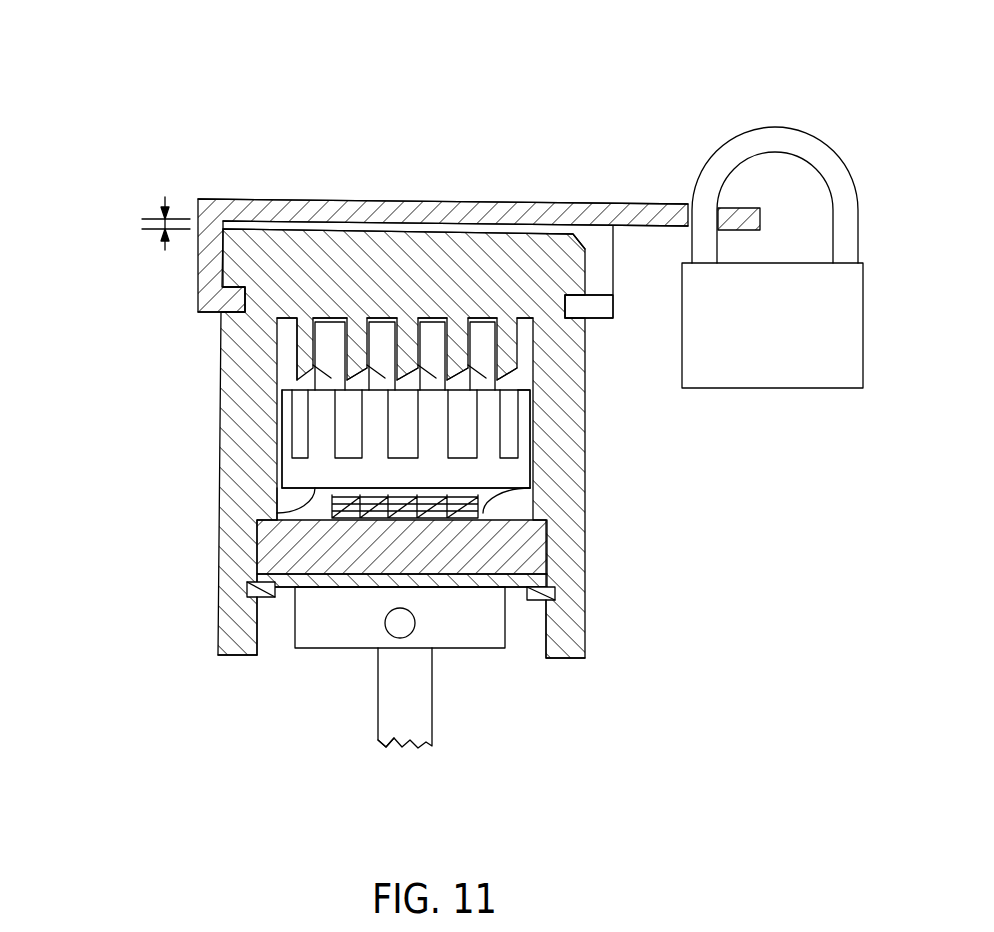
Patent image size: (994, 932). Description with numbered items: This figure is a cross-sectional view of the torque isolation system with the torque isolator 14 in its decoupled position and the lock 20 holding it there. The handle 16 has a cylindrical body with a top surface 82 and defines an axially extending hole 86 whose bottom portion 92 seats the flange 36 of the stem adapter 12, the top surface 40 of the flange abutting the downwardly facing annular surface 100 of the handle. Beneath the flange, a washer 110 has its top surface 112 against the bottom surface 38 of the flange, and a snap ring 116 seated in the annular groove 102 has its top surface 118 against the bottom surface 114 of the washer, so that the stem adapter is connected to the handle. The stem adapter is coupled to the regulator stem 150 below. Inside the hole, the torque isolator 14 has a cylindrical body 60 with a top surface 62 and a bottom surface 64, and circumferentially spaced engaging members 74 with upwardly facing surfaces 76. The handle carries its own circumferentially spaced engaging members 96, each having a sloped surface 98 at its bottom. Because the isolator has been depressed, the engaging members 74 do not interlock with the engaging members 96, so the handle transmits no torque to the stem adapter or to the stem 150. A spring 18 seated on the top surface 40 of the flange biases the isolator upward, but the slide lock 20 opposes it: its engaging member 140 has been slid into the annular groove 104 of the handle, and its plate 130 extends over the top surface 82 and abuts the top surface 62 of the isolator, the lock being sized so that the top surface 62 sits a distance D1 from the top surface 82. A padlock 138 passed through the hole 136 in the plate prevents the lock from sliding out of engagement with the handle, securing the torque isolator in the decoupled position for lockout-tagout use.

The stem adapter 12 is at (463, 668).
The torque isolator 14 is at (266, 474).
The handle 16 is at (600, 432).
The spring 18 is at (492, 506).
The lock 20 is at (341, 186).
The flange 36 is at (282, 548).
The bottom surface 38 is at (247, 597).
The top surface 40 is at (535, 503).
The cylindrical body 60 is at (420, 370).
The top surface 62 is at (460, 227).
The bottom surface 64 is at (300, 490).
The engaging members 74 is at (322, 415).
The upwardly facing surfaces 76 is at (487, 383).
The top surface 82 is at (540, 232).
The hole 86 is at (418, 616).
The bottom portion 92 is at (262, 655).
The engaging members 96 is at (300, 343).
The sloped surface 98 is at (313, 372).
The annular surface 100 is at (262, 528).
The annular groove 102 is at (553, 603).
The annular groove 104 is at (577, 304).
The washer 110 is at (566, 585).
The top surface 112 is at (547, 568).
The bottom surface 114 is at (525, 608).
The snap ring 116 is at (283, 612).
The top surface 118 is at (320, 583).
The plate 130 is at (259, 205).
The hole 136 is at (688, 222).
The padlock 138 is at (833, 402).
The engaging member 140 is at (220, 297).
The stem 150 is at (364, 740).
The distance D1 is at (140, 220).